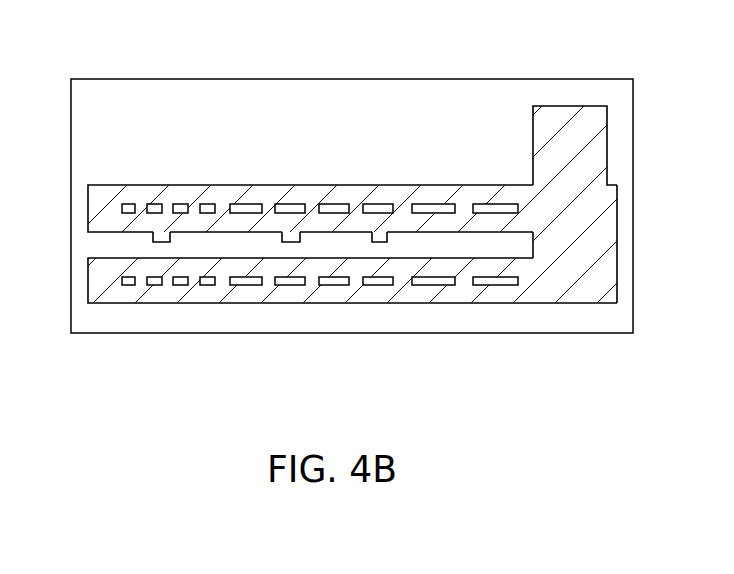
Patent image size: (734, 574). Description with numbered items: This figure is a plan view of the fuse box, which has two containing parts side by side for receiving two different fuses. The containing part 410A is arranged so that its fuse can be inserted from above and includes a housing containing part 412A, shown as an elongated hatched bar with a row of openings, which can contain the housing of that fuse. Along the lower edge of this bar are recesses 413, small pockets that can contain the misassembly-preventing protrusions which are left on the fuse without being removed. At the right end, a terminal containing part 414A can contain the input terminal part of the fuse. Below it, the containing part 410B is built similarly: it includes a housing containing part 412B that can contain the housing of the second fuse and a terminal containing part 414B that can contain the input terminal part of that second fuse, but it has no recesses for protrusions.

The containing part 410A is at (338, 180).
The containing part 410B is at (308, 308).
The housing containing part 412A is at (222, 200).
The housing containing part 412B is at (239, 290).
The recesses 413 is at (153, 240).
The terminal containing part 414A is at (584, 139).
The terminal containing part 414B is at (584, 259).